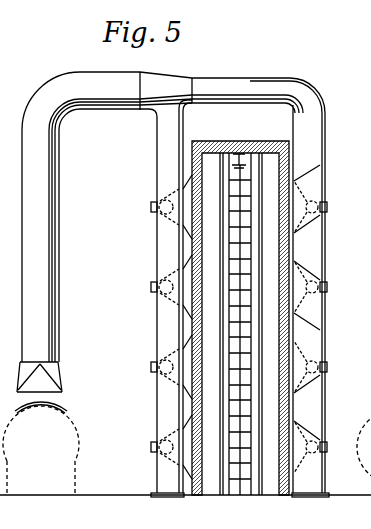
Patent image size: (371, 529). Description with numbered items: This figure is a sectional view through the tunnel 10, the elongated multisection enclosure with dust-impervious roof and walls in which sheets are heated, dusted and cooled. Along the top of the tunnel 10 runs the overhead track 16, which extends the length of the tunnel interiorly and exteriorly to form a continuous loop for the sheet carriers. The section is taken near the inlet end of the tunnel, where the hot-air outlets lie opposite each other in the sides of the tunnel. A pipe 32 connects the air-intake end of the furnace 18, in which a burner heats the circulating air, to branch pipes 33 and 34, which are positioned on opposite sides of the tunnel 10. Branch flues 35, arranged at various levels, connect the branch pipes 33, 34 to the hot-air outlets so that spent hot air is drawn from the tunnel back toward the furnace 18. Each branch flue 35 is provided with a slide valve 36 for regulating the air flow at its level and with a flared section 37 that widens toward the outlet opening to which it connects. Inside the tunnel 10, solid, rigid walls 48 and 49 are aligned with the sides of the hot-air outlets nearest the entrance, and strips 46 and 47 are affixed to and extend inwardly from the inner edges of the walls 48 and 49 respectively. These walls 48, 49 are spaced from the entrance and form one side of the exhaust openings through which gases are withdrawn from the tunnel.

The tunnel 10 is at (270, 141).
The overhead track 16 is at (239, 153).
The furnace 18 is at (74, 420).
The pipe 32 is at (60, 148).
The branch pipe 33 is at (325, 161).
The branch pipe 34 is at (159, 151).
The branch flue 35 is at (318, 205).
The slide valve 36 is at (327, 210).
The flared section 37 is at (294, 257).
The strip 46 is at (260, 330).
The strip 47 is at (232, 328).
The wall 48 is at (270, 390).
The wall 49 is at (203, 403).